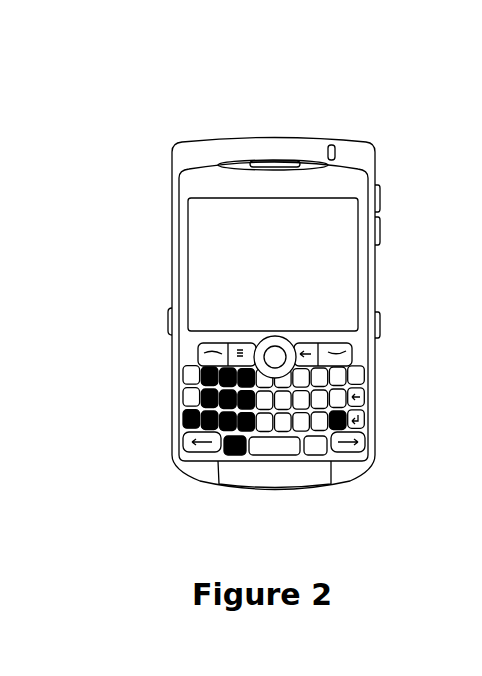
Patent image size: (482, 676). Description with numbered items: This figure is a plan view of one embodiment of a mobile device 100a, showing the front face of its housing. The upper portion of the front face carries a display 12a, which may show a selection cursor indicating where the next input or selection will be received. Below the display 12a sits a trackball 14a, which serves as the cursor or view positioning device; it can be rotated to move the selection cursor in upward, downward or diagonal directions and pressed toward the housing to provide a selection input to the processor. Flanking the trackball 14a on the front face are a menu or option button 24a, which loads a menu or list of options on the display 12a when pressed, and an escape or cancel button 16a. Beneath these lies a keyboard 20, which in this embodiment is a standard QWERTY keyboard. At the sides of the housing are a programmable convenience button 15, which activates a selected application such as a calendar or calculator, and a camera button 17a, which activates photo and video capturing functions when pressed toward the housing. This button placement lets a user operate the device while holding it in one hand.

The mobile device 100a is at (261, 314).
The display 12a is at (257, 254).
The trackball 14a is at (266, 342).
The programmable convenience button 15 is at (168, 323).
The camera button 17a is at (380, 322).
The escape or cancel button 16a is at (313, 355).
The menu or option button 24a is at (235, 355).
The keyboard 20 is at (193, 460).